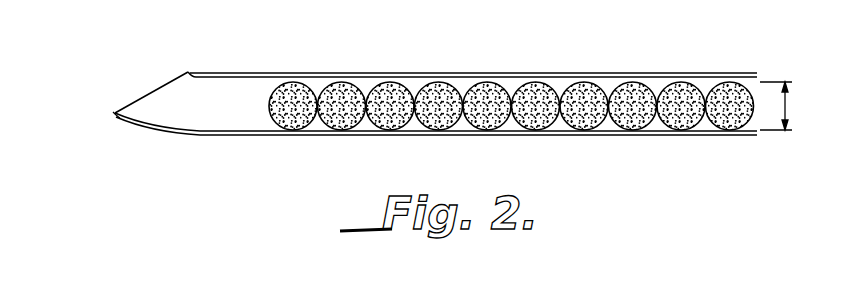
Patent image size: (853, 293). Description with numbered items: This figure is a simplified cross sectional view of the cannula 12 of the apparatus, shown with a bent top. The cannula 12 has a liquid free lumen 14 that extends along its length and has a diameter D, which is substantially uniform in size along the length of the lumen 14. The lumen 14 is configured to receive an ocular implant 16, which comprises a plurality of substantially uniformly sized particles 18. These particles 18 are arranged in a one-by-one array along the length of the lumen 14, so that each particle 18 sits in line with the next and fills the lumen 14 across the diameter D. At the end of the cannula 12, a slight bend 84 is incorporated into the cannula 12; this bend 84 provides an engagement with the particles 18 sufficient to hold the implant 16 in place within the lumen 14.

The cannula 12 is at (463, 75).
The lumen 14 is at (245, 119).
The ocular implant 16 is at (392, 115).
The particles 18 is at (343, 93).
The bend 84 is at (115, 114).
The diameter D is at (785, 104).